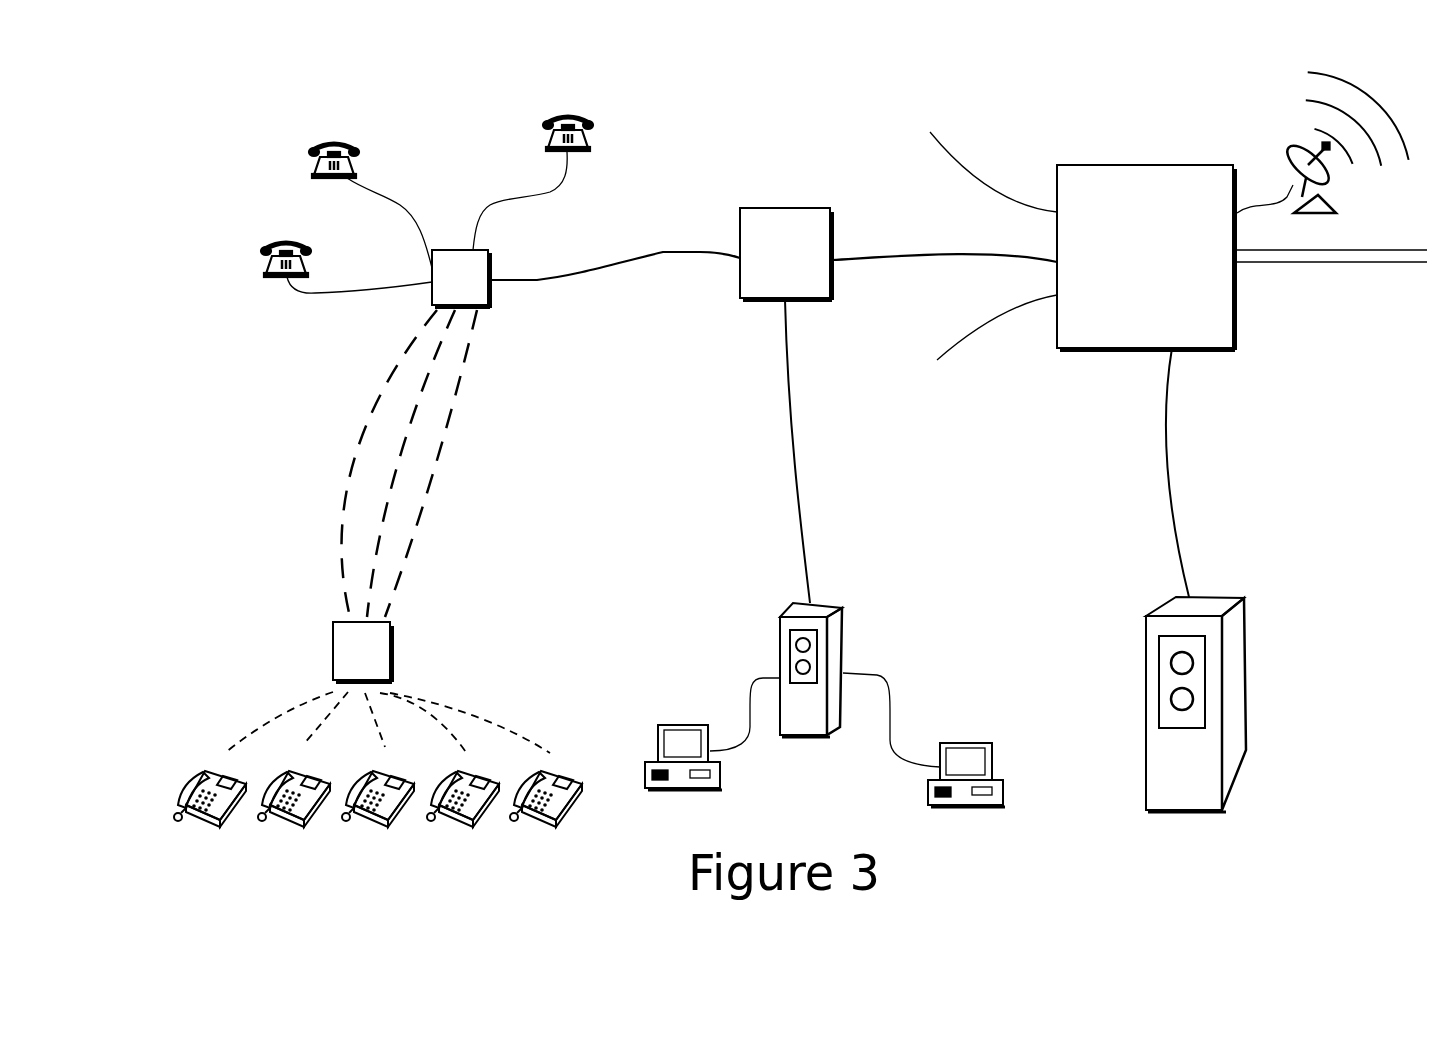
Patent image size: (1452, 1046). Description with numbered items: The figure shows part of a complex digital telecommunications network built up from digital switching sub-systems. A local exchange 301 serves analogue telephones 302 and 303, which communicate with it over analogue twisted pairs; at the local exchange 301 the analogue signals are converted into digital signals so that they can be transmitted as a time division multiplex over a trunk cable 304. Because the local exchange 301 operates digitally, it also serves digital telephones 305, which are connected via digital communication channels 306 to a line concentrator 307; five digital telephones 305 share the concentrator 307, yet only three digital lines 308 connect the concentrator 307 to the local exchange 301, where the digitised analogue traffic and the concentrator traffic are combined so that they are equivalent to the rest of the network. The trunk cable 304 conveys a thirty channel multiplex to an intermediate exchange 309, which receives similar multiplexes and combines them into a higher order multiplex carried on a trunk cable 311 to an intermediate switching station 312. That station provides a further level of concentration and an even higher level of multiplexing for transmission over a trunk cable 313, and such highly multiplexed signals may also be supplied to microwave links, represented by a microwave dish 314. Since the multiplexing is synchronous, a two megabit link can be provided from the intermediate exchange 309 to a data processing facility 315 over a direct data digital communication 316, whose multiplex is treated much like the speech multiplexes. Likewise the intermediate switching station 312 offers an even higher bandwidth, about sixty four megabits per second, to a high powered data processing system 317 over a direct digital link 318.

The local exchange 301 is at (450, 260).
The telephone 302 is at (333, 137).
The telephone 303 is at (583, 113).
The trunk cable 304 is at (620, 267).
The digital telephones 305 is at (445, 800).
The digital communication channels 306 is at (453, 713).
The line concentrator 307 is at (340, 638).
The digital lines 308 is at (412, 538).
The intermediate exchange 309 is at (782, 217).
The trunk cable 311 is at (940, 258).
The intermediate switching station 312 is at (1110, 175).
The trunk cable 313 is at (1307, 263).
The microwave dish 314 is at (1287, 150).
The data processing facility 315 is at (827, 603).
The direct data digital communication 316 is at (790, 398).
The high powered data processing system 317 is at (1241, 638).
The direct digital link 318 is at (1176, 494).